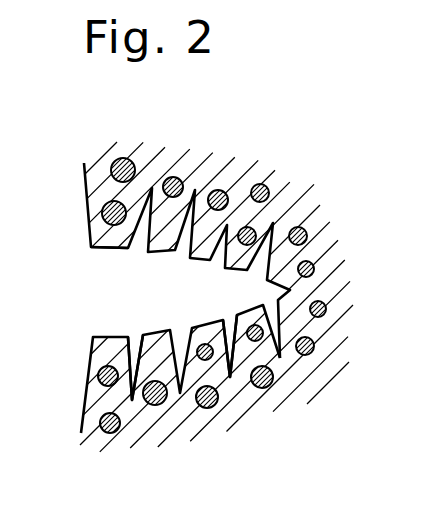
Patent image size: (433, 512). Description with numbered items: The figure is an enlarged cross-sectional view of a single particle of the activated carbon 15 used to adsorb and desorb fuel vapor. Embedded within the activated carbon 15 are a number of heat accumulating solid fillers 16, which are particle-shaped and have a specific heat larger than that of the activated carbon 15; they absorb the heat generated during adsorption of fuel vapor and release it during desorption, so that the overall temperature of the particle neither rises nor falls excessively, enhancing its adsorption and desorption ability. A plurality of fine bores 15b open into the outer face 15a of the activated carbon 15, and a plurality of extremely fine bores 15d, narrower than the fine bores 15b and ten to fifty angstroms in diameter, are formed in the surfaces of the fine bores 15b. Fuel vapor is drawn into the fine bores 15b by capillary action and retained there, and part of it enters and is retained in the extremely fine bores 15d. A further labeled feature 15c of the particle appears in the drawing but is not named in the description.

The activated carbon 15 is at (231, 413).
The outer face 15a is at (88, 232).
The fine bores 15b is at (103, 328).
The flat end face of tooth 15c is at (114, 250).
The extremely fine bores 15d is at (136, 343).
The heat accumulating solid fillers 16 is at (176, 177).